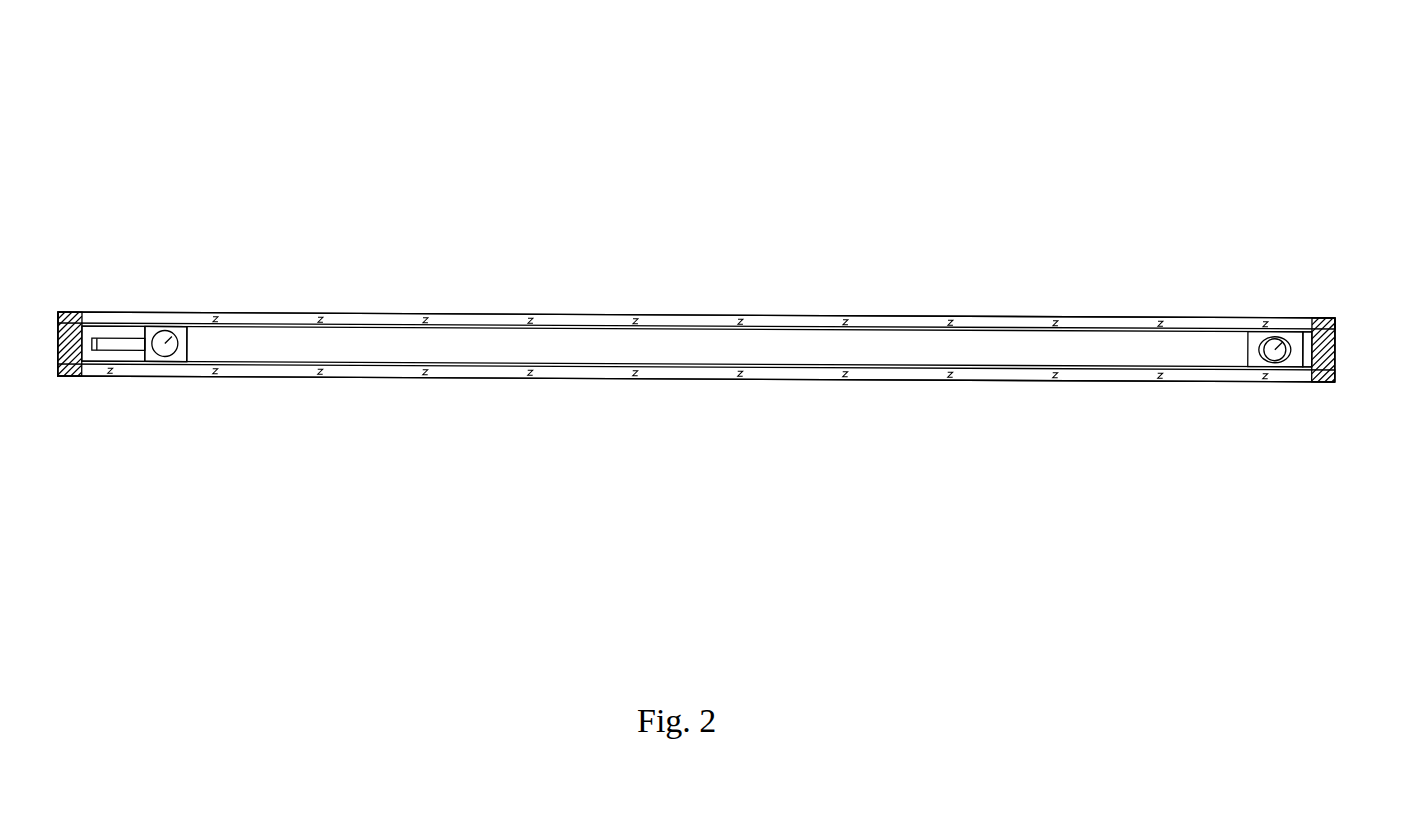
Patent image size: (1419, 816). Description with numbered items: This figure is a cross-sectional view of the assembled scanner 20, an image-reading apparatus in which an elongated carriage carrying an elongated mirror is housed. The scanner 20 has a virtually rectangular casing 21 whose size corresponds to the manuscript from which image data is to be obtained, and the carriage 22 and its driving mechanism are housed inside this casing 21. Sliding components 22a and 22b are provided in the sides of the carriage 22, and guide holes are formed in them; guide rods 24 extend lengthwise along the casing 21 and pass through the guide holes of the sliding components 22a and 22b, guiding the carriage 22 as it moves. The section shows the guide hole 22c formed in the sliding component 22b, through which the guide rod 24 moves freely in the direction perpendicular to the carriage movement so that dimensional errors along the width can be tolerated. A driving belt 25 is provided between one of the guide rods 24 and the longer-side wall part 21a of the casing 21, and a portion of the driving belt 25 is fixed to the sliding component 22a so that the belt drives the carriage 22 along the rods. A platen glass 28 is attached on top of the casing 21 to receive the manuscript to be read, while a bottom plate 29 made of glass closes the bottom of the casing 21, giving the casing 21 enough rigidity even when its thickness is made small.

The scanner 20 is at (663, 200).
The casing 21 is at (1337, 348).
The longer-side wall part 21a is at (62, 380).
The carriage 22 is at (754, 345).
The sliding component 22a is at (190, 378).
The sliding component 22b is at (1300, 327).
The guide hole 22c is at (1293, 378).
The guide rod 24 is at (176, 325).
The driving belt 25 is at (95, 337).
The platen glass 28 is at (1010, 322).
The bottom plate 29 is at (1005, 378).